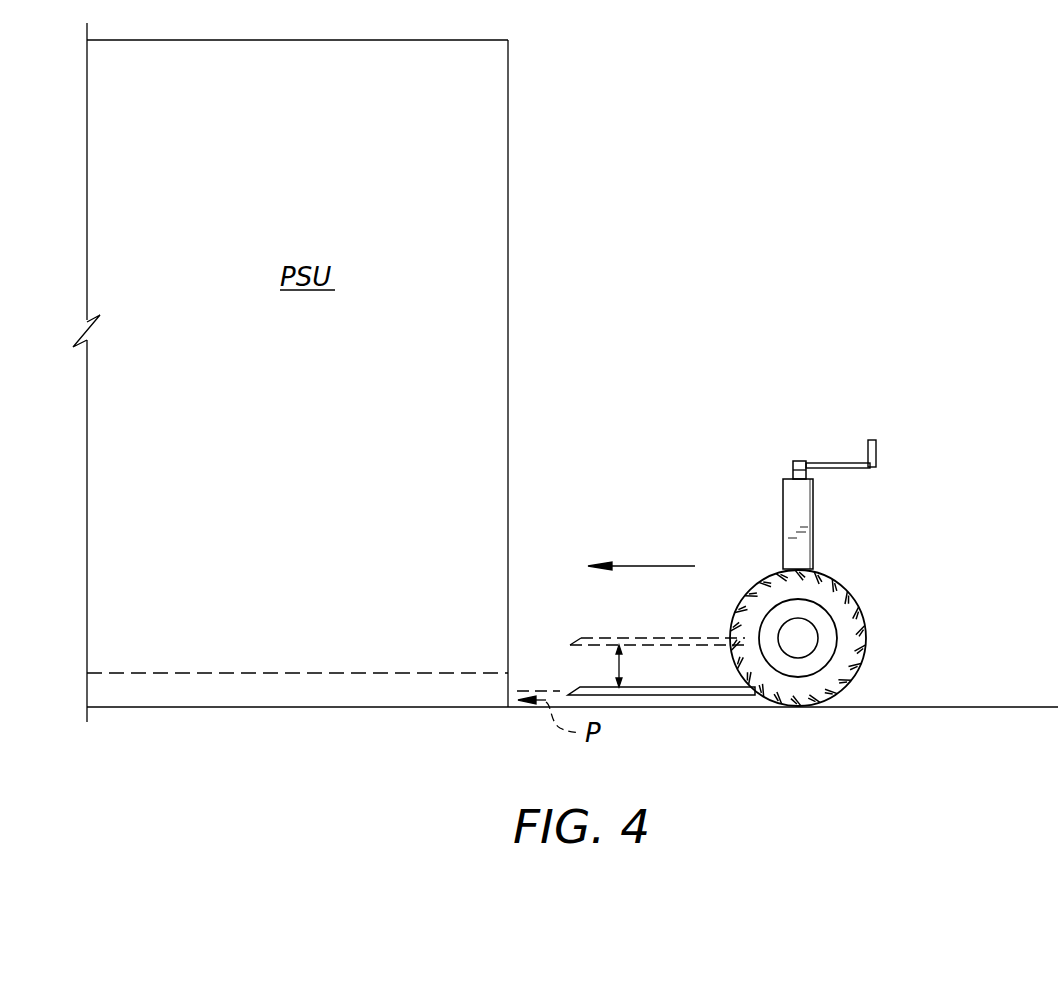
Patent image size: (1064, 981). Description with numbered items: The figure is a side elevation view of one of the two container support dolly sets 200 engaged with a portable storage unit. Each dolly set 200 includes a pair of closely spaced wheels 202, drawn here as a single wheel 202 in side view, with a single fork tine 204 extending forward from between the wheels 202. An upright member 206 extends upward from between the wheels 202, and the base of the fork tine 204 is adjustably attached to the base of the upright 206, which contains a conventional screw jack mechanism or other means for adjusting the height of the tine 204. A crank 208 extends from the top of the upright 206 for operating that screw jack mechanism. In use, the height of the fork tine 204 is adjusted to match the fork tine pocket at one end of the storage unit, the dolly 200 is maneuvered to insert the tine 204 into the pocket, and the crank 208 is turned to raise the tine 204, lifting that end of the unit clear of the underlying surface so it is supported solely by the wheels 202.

The container support dolly set 200 is at (941, 511).
The wheel 202 is at (866, 603).
The fork tine 204 is at (683, 647).
The upright member 206 is at (783, 505).
The crank 208 is at (838, 463).